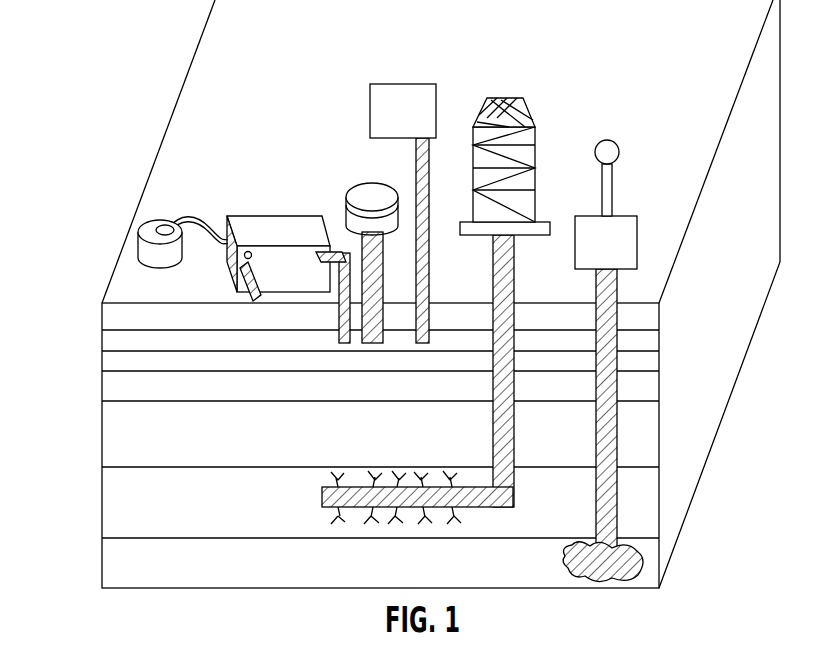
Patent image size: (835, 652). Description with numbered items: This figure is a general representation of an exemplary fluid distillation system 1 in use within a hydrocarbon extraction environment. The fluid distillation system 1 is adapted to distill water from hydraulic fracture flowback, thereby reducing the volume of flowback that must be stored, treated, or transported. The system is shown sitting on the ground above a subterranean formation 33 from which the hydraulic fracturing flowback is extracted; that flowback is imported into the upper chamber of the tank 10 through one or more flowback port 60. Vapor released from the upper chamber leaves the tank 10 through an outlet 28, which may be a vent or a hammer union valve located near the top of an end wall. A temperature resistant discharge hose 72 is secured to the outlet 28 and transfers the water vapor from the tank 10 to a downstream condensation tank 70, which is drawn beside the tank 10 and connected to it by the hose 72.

The fluid distillation system 1 is at (244, 187).
The tank 10 is at (257, 249).
The outlet 28 is at (232, 268).
The subterranean formation 33 is at (100, 503).
The flowback port 60 is at (250, 253).
The condensation tank 70 is at (138, 247).
The temperature resistant discharge hose 72 is at (168, 216).